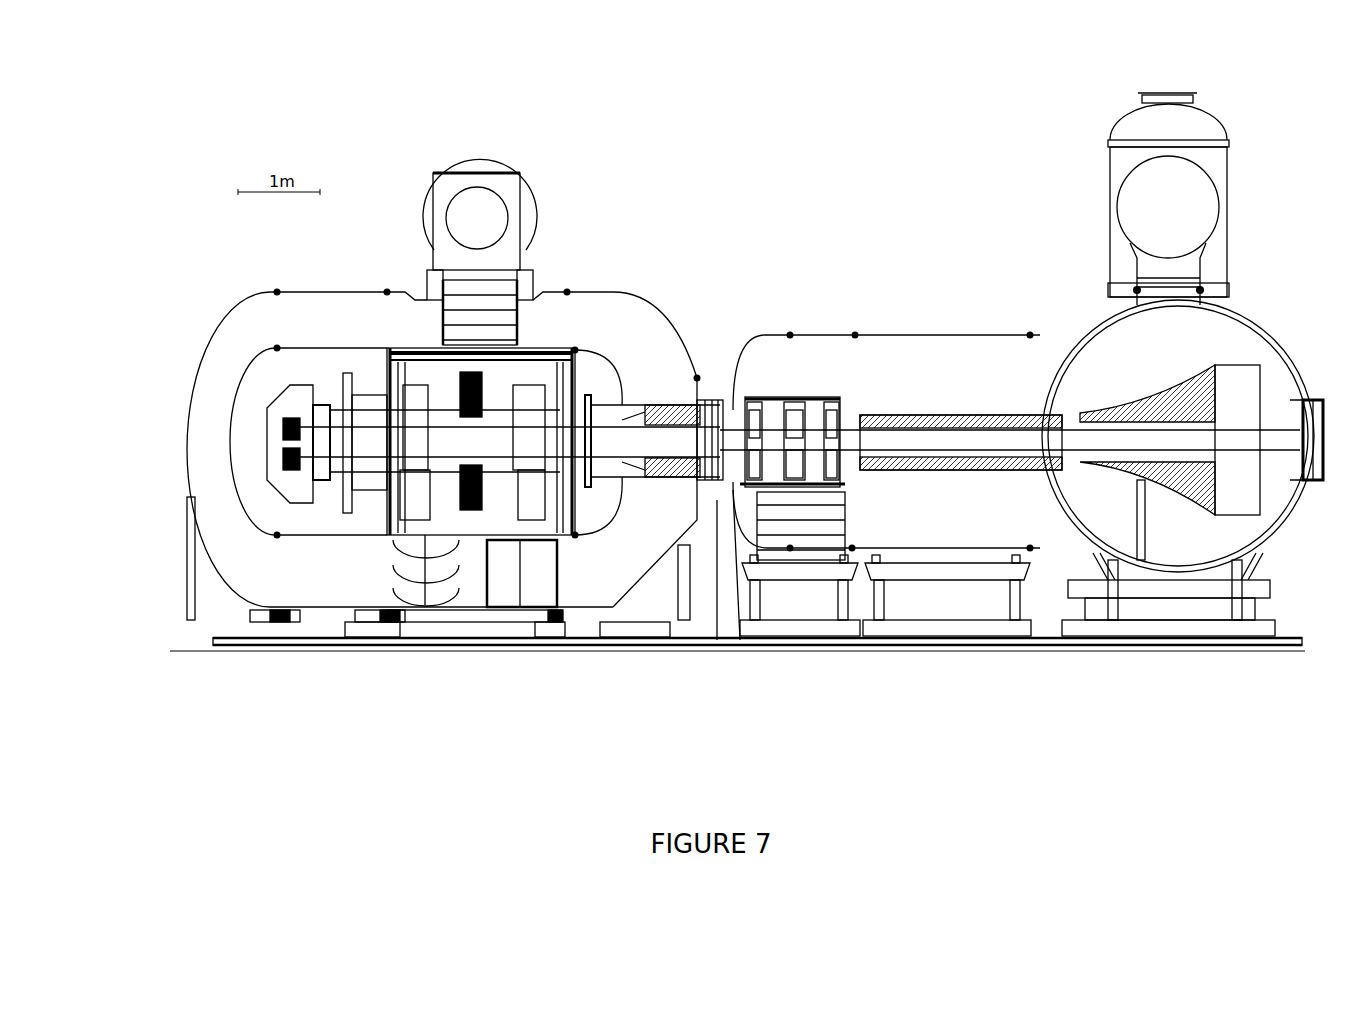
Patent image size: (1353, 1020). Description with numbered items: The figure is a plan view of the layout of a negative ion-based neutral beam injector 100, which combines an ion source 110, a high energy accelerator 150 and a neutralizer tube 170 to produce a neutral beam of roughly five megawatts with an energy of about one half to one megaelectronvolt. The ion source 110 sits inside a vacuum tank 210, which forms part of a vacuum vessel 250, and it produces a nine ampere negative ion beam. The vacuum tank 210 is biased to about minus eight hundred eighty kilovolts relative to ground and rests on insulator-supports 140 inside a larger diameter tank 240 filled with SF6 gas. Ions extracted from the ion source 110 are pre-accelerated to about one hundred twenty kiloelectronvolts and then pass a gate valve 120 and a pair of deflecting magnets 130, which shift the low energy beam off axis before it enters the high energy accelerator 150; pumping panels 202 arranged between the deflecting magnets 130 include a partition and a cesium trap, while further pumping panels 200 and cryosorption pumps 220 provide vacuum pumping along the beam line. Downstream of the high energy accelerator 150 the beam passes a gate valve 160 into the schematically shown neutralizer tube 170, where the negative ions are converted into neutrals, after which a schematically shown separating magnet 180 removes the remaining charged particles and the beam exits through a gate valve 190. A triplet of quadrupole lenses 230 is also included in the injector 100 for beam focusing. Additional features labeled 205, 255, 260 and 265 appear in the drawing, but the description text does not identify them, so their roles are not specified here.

The negative ion-based neutral beam injector 100 is at (375, 133).
The ion source 110 is at (303, 470).
The gate valve 120 is at (355, 495).
The deflecting magnets 130 is at (527, 480).
The insulator-support 140 is at (552, 585).
The high energy accelerator 150 is at (632, 478).
The gate valve 160 is at (720, 485).
The neutralizer tube 170 is at (915, 462).
The separating magnet 180 is at (1118, 565).
The gate valve 190 is at (1310, 475).
The pumping panels 200 is at (521, 350).
The pumping panels 202 is at (450, 383).
The pump casing wall 205 is at (589, 378).
The vacuum tank 210 is at (590, 398).
The cryosorption pumps 220 is at (1112, 173).
The triplet of quadrupole lenses 230 is at (800, 545).
The larger diameter tank 240 is at (190, 380).
The vacuum vessel 250 is at (745, 338).
The duct 255 is at (903, 335).
The nozzle 260 is at (663, 400).
The bearing unit 265 is at (814, 380).